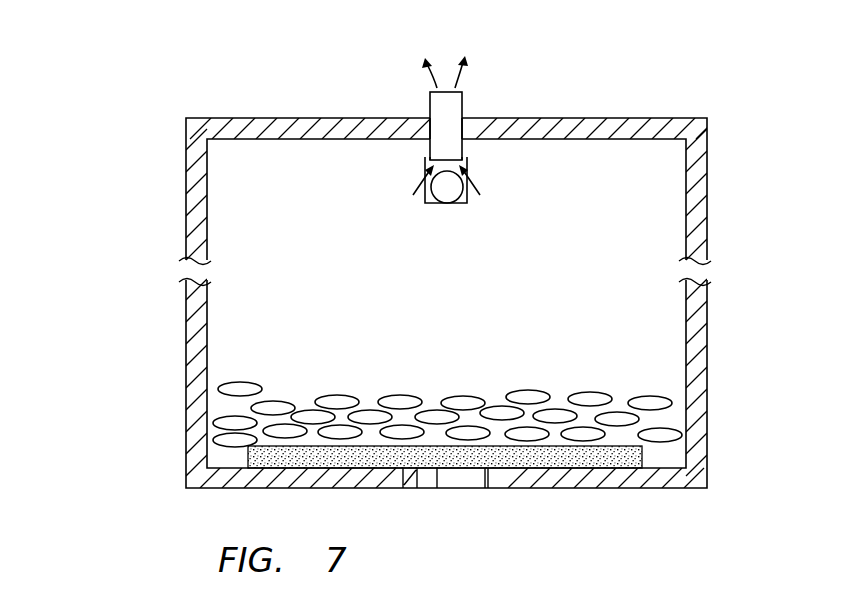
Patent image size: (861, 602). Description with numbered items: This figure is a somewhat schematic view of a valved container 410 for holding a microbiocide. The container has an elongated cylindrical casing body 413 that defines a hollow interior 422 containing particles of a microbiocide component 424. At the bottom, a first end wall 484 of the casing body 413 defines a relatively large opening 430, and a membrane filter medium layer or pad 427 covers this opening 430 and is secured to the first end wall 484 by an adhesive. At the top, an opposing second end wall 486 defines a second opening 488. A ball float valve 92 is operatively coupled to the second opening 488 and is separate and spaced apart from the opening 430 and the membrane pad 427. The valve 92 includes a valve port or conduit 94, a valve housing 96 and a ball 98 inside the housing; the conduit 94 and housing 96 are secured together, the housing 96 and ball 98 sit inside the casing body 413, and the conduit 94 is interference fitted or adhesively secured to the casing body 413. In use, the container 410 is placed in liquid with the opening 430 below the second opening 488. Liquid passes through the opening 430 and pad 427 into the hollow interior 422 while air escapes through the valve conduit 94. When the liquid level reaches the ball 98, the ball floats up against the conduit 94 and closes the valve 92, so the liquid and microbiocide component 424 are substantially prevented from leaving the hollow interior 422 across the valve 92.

The valved container 410 is at (153, 205).
The casing body 413 is at (699, 212).
The hollow interior 422 is at (630, 318).
The microbiocide component 424 is at (253, 408).
The membrane filter medium layer or pad 427 is at (627, 458).
The opening 430 is at (409, 471).
The first end wall 484 is at (527, 480).
The second end wall 486 is at (588, 128).
The second opening 488 is at (470, 123).
The ball float valve 92 is at (428, 151).
The valve port or conduit 94 is at (429, 112).
The valve housing 96 is at (467, 161).
The ball 98 is at (447, 200).